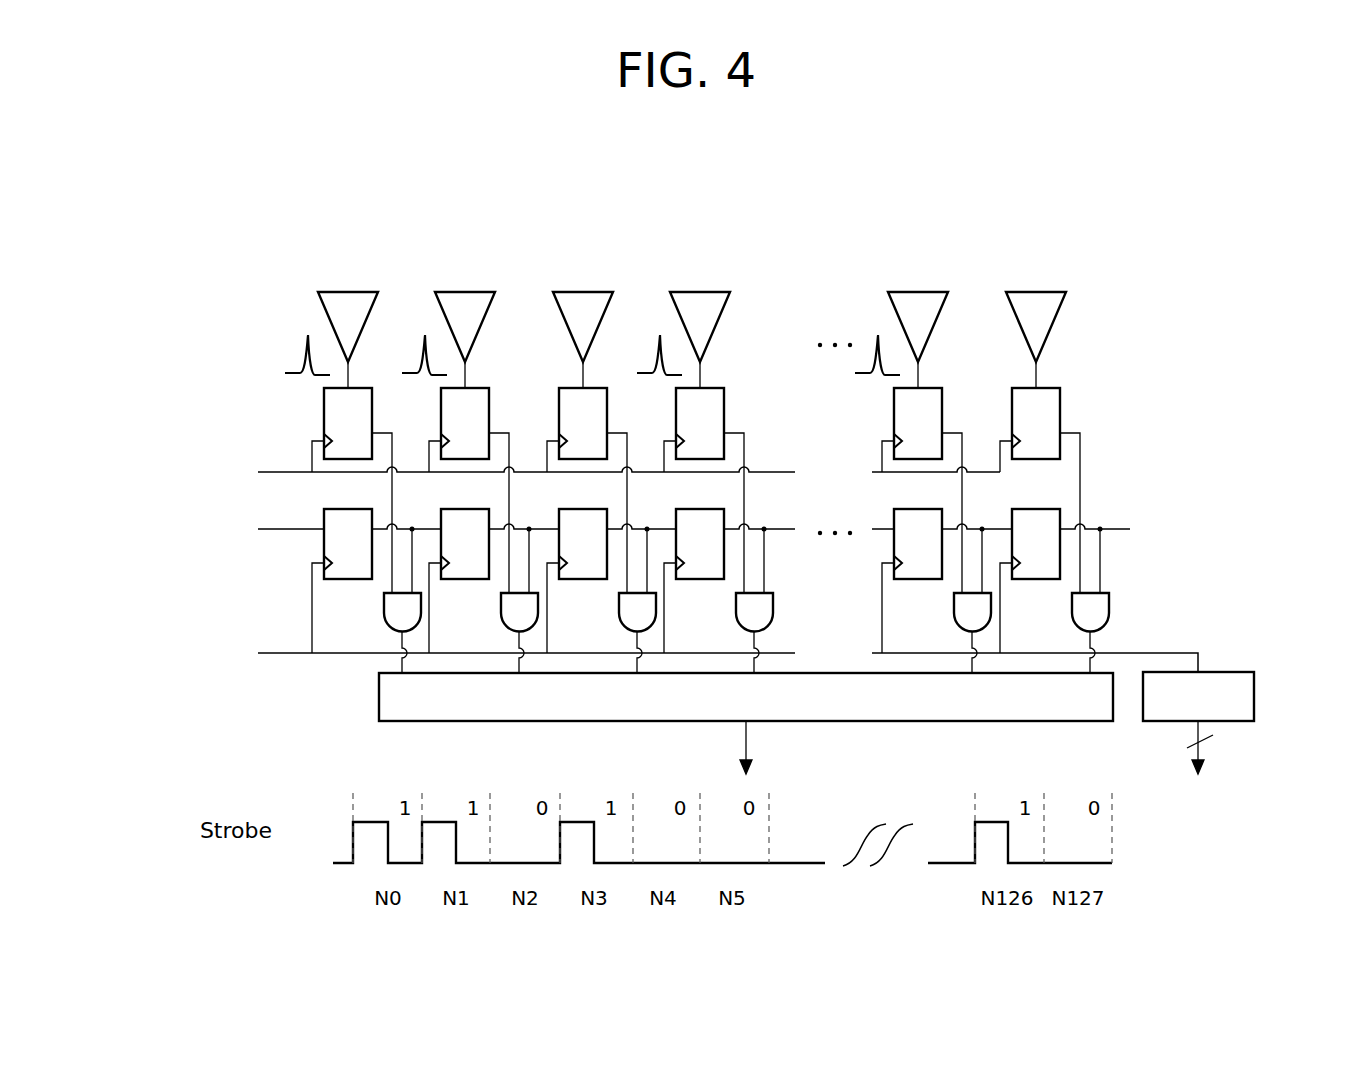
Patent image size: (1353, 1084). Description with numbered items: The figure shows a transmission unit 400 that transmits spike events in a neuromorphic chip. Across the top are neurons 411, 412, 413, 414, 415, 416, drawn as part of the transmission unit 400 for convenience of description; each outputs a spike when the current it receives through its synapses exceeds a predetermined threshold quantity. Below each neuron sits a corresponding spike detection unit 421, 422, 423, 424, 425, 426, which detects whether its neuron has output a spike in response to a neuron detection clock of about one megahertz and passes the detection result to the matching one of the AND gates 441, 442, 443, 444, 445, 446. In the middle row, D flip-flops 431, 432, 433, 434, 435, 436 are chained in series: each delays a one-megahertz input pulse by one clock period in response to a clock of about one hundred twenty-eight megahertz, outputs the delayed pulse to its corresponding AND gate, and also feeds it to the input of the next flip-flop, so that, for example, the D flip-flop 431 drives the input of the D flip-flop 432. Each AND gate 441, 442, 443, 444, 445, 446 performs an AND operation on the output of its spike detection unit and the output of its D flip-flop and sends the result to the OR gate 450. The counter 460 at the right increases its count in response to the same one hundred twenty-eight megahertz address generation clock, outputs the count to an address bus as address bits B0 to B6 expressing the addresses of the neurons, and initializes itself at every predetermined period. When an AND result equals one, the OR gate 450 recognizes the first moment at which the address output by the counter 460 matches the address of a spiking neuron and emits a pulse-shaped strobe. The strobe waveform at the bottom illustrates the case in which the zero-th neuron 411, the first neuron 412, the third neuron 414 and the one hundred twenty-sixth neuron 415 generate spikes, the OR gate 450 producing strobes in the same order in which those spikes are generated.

The transmission unit 400 is at (627, 205).
The neuron 411 is at (346, 290).
The neuron 412 is at (463, 290).
The neuron 413 is at (581, 290).
The neuron 414 is at (698, 290).
The neuron 415 is at (916, 290).
The neuron 416 is at (1034, 290).
The spike detection unit 421 is at (373, 405).
The spike detection unit 422 is at (490, 405).
The spike detection unit 423 is at (608, 405).
The spike detection unit 424 is at (725, 405).
The spike detection unit 425 is at (943, 405).
The spike detection unit 426 is at (1061, 405).
The D flip-flop 431 is at (360, 508).
The D flip-flop 432 is at (477, 508).
The D flip-flop 433 is at (595, 508).
The D flip-flop 434 is at (712, 508).
The D flip-flop 435 is at (930, 508).
The D flip-flop 436 is at (1048, 508).
The AND gate 441 is at (384, 605).
The AND gate 442 is at (501, 605).
The AND gate 443 is at (619, 605).
The AND gate 444 is at (736, 605).
The AND gate 445 is at (954, 605).
The AND gate 446 is at (1072, 605).
The OR gate 450 is at (863, 722).
The counter 460 is at (1227, 672).